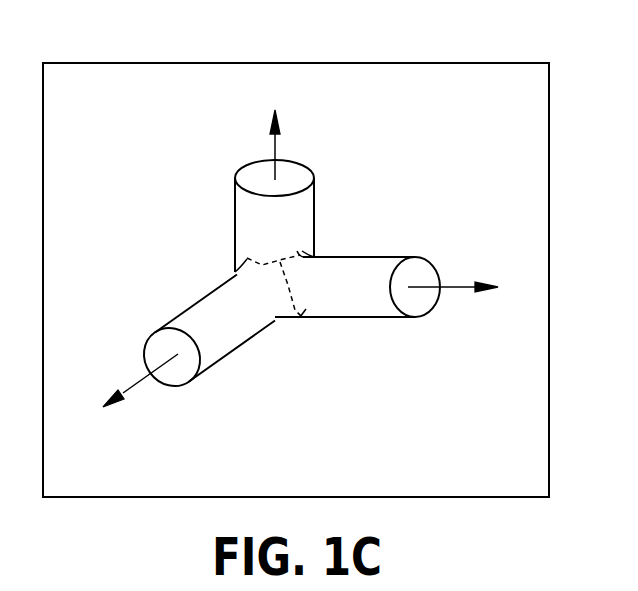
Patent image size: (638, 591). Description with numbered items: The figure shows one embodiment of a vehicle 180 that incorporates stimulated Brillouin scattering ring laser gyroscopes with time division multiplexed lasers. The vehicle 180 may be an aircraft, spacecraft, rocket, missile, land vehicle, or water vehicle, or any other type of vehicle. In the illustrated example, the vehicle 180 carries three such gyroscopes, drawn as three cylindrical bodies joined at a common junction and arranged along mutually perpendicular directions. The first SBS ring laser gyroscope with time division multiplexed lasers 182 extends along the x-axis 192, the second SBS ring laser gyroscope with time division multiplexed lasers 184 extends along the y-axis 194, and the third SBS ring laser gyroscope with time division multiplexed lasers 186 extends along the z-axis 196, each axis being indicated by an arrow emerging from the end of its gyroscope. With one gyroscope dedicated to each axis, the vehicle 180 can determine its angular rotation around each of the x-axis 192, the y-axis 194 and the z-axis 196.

The vehicle 180 is at (348, 30).
The SBS ring laser gyroscope with time division multiplexed lasers 182 is at (351, 256).
The SBS ring laser gyroscope with time division multiplexed lasers 184 is at (235, 232).
The SBS ring laser gyroscope with time division multiplexed lasers 186 is at (265, 335).
The x-axis 192 is at (455, 289).
The y-axis 194 is at (279, 150).
The z-axis 196 is at (134, 378).